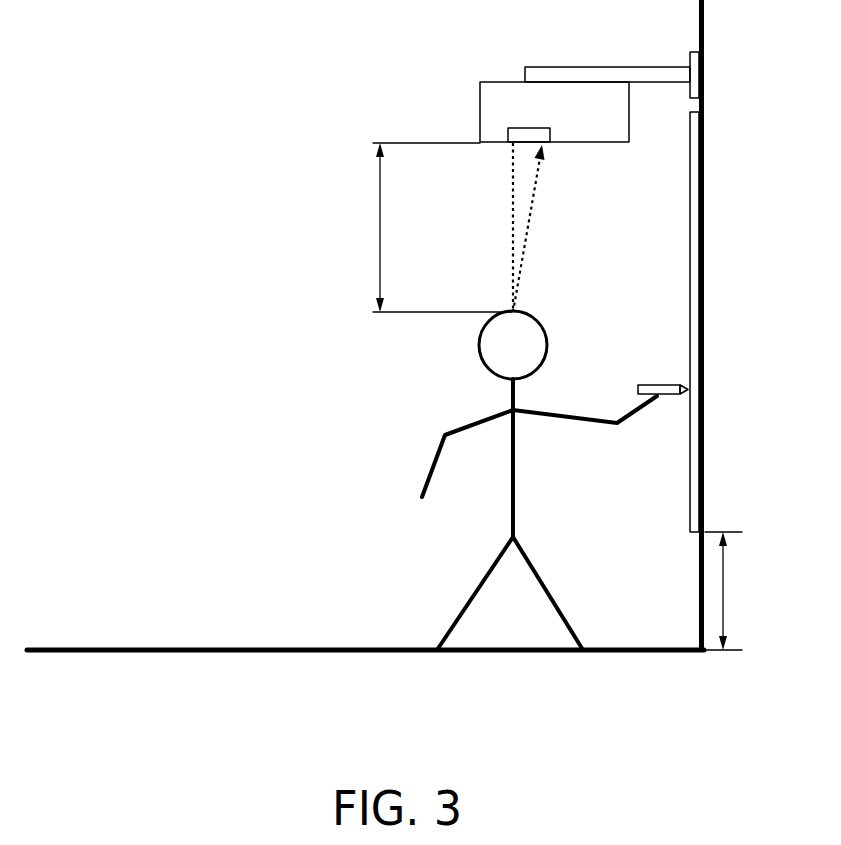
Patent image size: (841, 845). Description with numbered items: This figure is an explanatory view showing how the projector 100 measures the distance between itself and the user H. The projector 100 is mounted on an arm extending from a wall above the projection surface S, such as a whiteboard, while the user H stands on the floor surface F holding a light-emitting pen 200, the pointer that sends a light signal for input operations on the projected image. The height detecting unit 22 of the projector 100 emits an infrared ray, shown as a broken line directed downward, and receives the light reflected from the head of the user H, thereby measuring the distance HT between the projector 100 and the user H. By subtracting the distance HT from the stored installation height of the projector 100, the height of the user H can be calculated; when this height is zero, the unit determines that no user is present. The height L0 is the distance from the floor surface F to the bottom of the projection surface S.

The projector 100 is at (498, 82).
The height detecting unit 22 is at (522, 131).
The light-emitting pen 200 is at (658, 385).
The projection surface S is at (694, 210).
The user H is at (514, 493).
The floor surface F is at (275, 648).
The distance between the projector and the user HT is at (422, 227).
The height from floor surface to bottom of projection surface L0 is at (734, 591).